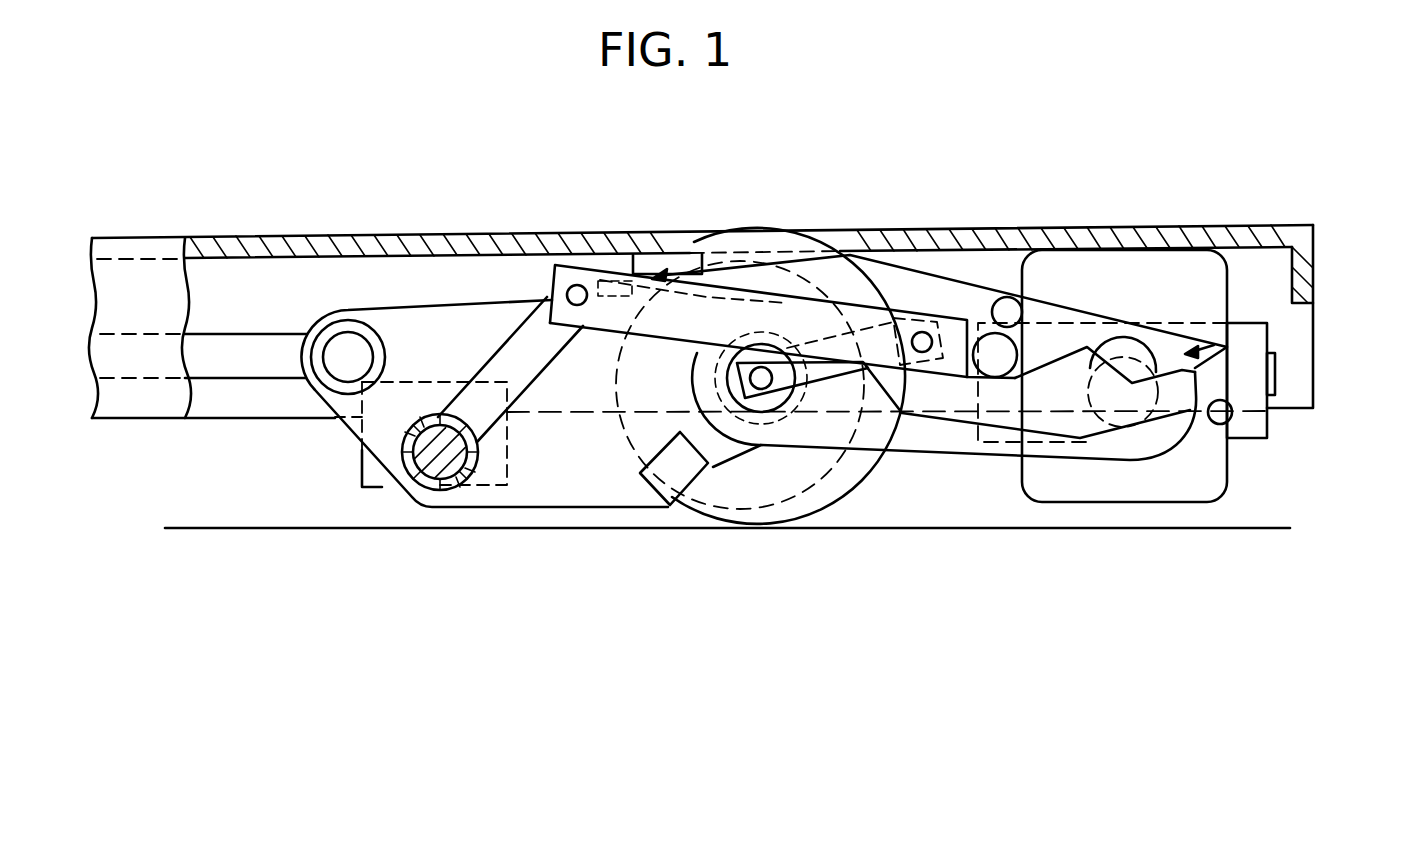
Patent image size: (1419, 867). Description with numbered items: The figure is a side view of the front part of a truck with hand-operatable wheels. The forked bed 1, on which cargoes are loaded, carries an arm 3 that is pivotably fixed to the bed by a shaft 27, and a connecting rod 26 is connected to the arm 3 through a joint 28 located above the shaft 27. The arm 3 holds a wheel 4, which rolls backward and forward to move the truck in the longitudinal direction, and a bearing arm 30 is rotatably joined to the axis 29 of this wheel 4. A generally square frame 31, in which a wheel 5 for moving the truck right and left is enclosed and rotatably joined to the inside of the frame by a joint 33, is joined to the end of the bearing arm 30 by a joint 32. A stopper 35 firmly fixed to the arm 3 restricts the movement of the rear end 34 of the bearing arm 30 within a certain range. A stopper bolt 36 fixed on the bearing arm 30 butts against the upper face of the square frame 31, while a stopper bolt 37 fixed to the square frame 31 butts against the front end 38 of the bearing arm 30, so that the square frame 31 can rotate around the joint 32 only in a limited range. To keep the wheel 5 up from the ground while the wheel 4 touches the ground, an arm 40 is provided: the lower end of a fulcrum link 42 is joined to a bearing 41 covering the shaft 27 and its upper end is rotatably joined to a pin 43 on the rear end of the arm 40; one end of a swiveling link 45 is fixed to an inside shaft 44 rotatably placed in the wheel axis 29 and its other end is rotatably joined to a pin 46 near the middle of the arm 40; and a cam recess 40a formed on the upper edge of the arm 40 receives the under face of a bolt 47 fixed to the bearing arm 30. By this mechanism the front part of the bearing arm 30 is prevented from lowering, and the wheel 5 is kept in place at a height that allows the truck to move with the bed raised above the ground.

The forked bed 1 is at (143, 252).
The connecting rod 26 is at (235, 350).
The joint 28 is at (347, 370).
The arm 3 is at (560, 483).
The bearing 41 is at (405, 462).
The shaft 27 is at (436, 470).
The fulcrum link 42 is at (517, 345).
The pin 43 is at (577, 286).
The arm 40 is at (850, 322).
The cam recess 40a is at (1065, 340).
The rear end 34 is at (632, 358).
The stopper 35 is at (692, 480).
The axis 29 is at (762, 395).
The inside shaft 44 is at (775, 400).
The wheel 4 is at (830, 482).
The swiveling link 45 is at (870, 447).
The pin 46 is at (927, 352).
The bolt 47 is at (988, 333).
The stopper bolt 36 is at (1004, 297).
The wheel 5 is at (1170, 482).
The bearing arm 30 is at (1107, 448).
The joint 32 is at (1135, 365).
The square frame 31 is at (1243, 332).
The front end 38 is at (1230, 347).
The joint 33 is at (1275, 375).
The stopper bolt 37 is at (1227, 418).